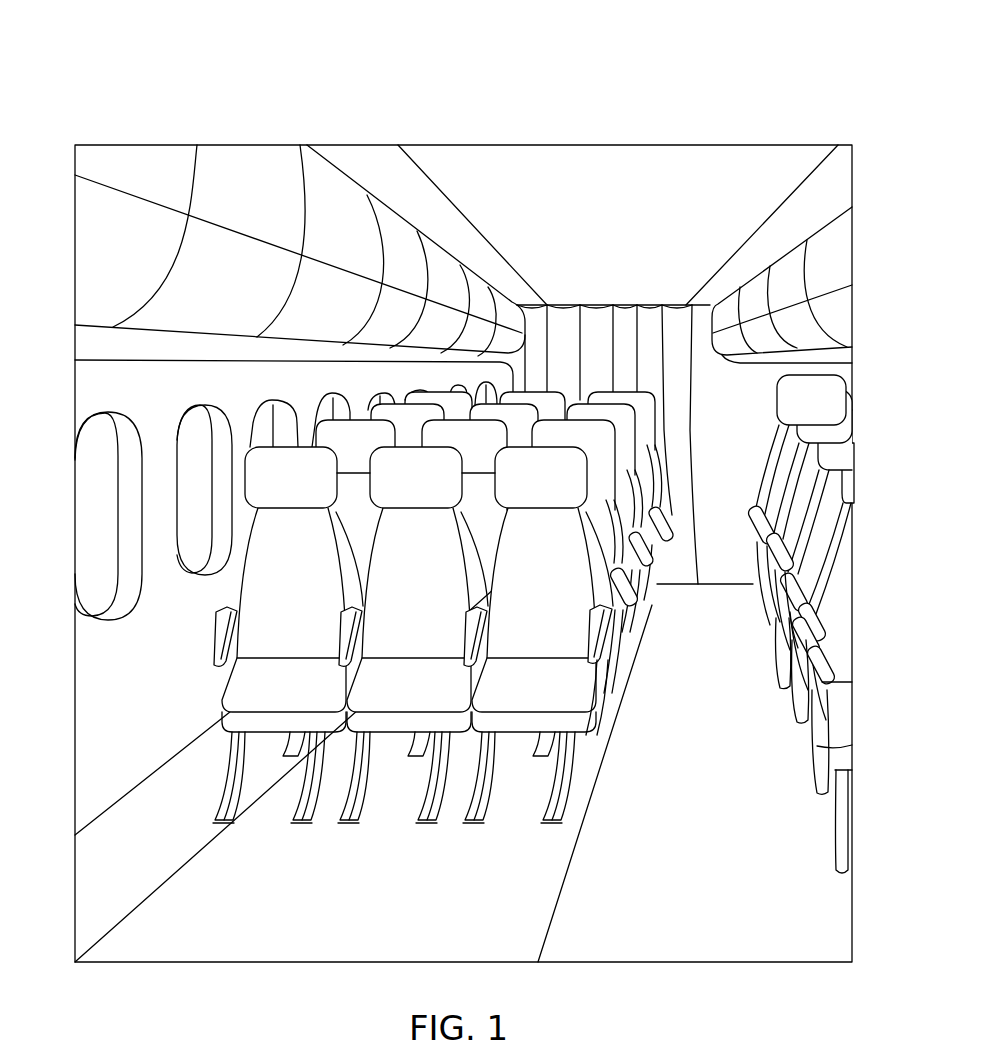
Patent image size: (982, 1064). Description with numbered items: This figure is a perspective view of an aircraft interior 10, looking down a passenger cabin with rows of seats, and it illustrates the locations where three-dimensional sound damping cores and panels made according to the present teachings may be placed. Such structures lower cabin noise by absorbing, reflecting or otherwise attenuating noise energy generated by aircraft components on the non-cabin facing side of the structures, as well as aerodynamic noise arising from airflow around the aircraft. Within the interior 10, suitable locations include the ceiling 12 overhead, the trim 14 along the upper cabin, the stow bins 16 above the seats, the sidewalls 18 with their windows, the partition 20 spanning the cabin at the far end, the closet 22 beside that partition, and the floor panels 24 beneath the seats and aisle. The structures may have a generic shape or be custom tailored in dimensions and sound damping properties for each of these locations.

The aircraft interior 10 is at (799, 84).
The ceiling 12 is at (658, 162).
The trim 14 is at (360, 162).
The stow bin 16 is at (125, 162).
The sidewall 18 is at (100, 690).
The partition 20 is at (598, 320).
The closet 22 is at (703, 317).
The floor panel 24 is at (828, 907).